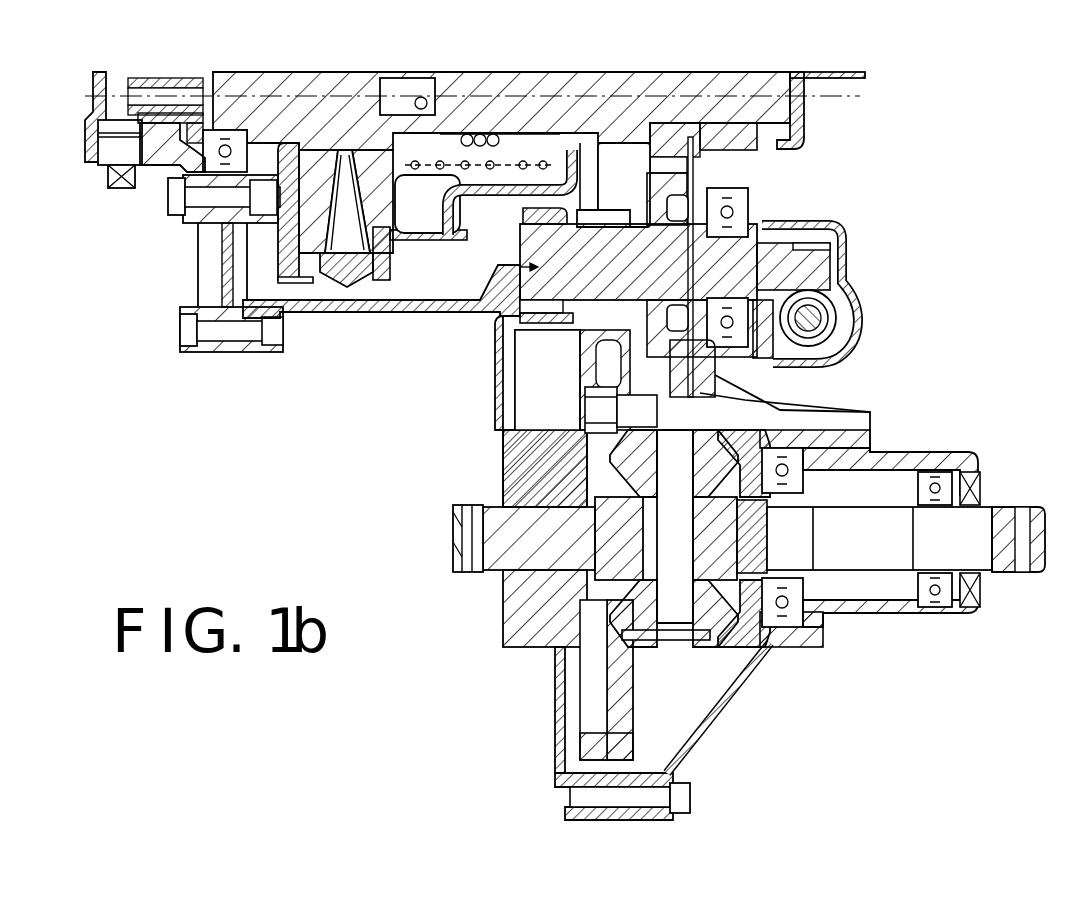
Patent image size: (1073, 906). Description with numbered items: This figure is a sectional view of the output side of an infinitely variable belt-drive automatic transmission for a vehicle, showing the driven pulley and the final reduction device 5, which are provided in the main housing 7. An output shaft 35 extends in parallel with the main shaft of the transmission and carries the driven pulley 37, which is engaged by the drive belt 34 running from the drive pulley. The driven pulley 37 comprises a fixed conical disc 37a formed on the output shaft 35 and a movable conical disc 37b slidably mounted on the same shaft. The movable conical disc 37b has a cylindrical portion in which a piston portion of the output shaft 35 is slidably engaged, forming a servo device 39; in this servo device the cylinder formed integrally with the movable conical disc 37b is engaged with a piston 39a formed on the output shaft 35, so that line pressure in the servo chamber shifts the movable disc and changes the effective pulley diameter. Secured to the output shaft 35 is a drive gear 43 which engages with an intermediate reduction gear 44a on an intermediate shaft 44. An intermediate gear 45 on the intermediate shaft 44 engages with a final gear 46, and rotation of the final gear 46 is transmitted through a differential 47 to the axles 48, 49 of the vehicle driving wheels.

The final reduction device 5 is at (680, 666).
The main housing 7 is at (418, 314).
The drive belt 34 is at (357, 290).
The output shaft 35 is at (800, 132).
The driven pulley 37 is at (302, 284).
The fixed conical disc 37a is at (307, 240).
The movable conical disc 37b is at (388, 250).
The servo device 39 is at (494, 205).
The piston 39a is at (428, 205).
The drive gear 43 is at (660, 150).
The intermediate shaft 44 is at (825, 255).
The intermediate reduction gear 44a is at (717, 377).
The intermediate gear 45 is at (612, 218).
The final gear 46 is at (590, 708).
The differential 47 is at (737, 627).
The axle 48 is at (465, 562).
The axle 49 is at (1007, 512).